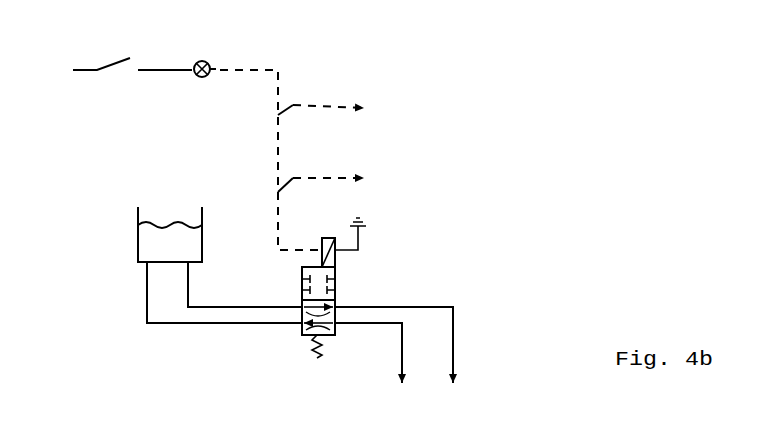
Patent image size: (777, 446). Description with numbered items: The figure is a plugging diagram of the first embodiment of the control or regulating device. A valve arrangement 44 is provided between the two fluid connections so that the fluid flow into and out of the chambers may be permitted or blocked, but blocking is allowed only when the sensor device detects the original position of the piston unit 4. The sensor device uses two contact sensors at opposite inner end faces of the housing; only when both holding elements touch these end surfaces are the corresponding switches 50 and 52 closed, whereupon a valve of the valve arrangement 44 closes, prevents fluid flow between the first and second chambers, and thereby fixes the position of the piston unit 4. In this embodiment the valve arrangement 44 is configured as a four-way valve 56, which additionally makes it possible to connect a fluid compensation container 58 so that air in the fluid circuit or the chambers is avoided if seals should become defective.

The piston unit 4 is at (78, 66).
The switch 50 is at (272, 112).
The switch 52 is at (273, 188).
The four-way valve 56 is at (337, 285).
The fluid compensation container 58 is at (150, 238).
The valve arrangement 44 is at (290, 338).